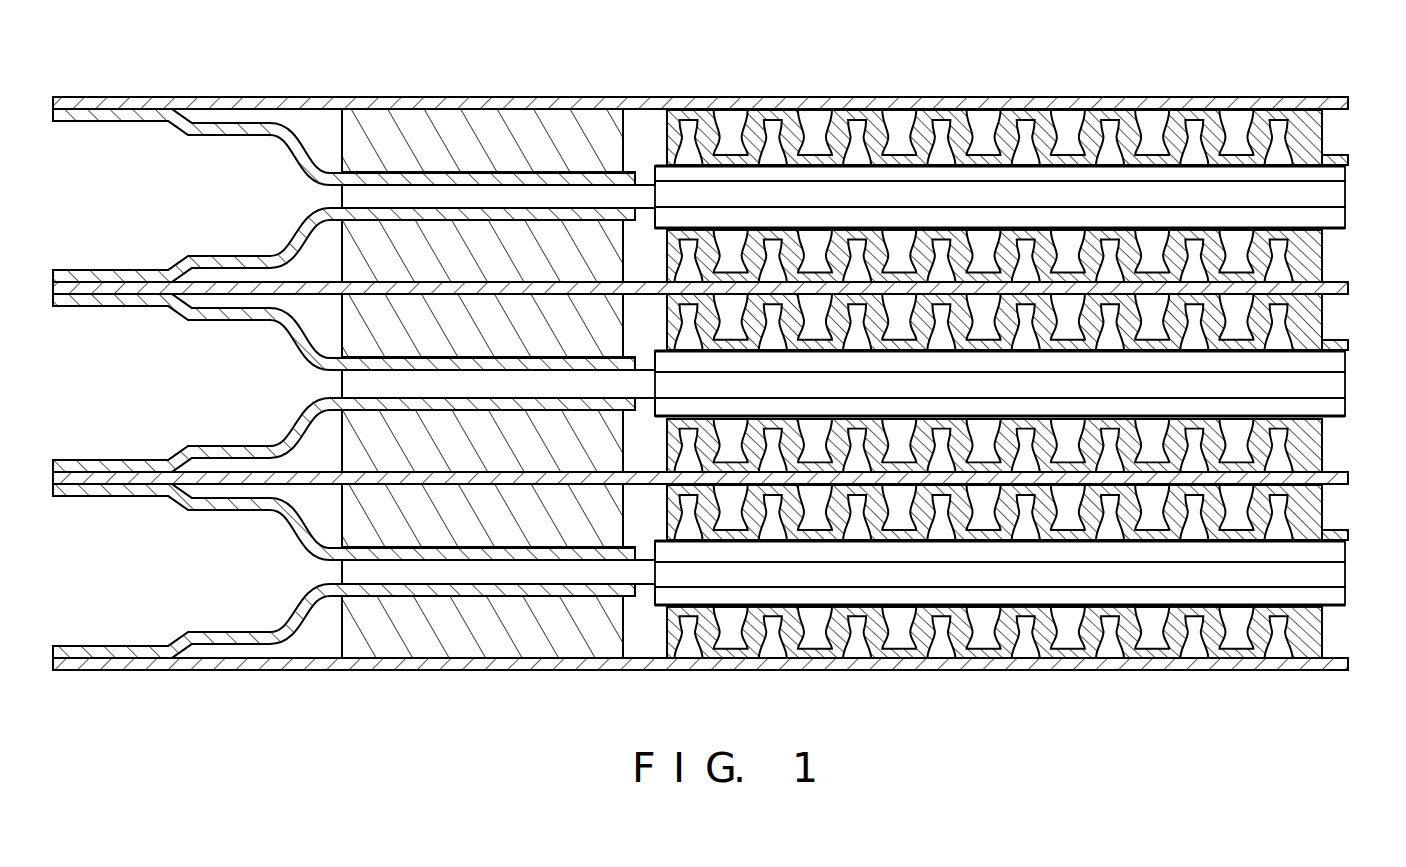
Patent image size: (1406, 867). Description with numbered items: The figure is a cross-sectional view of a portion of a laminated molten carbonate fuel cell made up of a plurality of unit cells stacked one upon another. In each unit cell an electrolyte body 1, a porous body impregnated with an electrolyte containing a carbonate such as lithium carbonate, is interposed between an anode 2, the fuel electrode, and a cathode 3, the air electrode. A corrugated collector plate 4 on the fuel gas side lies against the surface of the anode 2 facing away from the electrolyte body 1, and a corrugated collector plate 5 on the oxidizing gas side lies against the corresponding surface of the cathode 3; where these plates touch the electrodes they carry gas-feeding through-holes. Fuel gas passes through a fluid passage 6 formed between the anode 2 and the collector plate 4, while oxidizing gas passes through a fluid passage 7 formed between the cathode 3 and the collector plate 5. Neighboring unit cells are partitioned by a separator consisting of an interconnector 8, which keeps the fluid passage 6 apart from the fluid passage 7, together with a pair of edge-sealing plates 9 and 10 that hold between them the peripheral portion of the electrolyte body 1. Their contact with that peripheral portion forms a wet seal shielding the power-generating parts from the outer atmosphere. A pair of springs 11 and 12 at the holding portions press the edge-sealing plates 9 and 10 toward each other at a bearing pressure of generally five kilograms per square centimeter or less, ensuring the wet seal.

The electrolyte body 1 is at (1340, 198).
The anode 2 is at (1340, 175).
The cathode 3 is at (1340, 216).
The corrugated collector plate 4 is at (1322, 126).
The corrugated collector plate 5 is at (1322, 256).
The fluid passage 6 is at (1238, 135).
The fluid passage 7 is at (1320, 308).
The interconnector 8 is at (1300, 96).
The edge-sealing plate 9 is at (244, 132).
The edge-sealing plate 10 is at (206, 262).
The spring 11 is at (355, 139).
The spring 12 is at (355, 266).